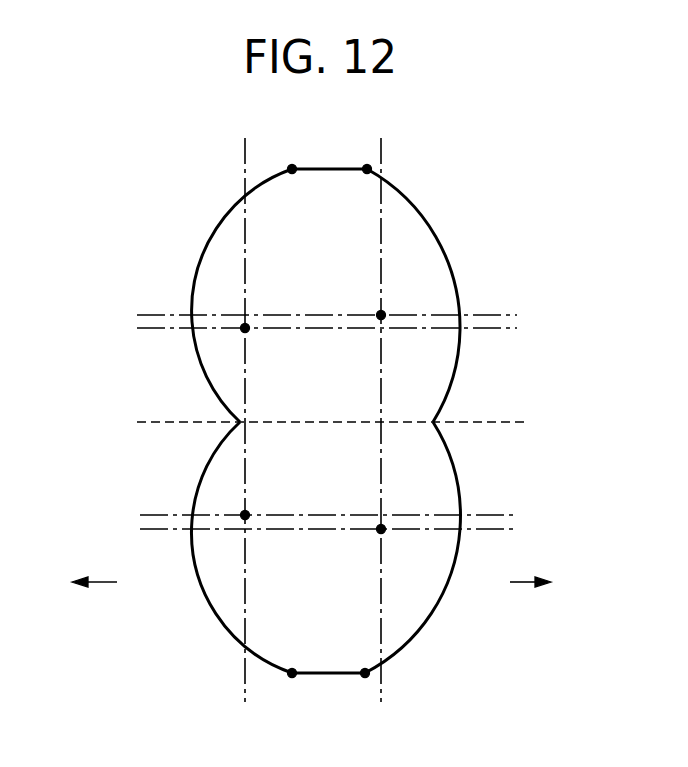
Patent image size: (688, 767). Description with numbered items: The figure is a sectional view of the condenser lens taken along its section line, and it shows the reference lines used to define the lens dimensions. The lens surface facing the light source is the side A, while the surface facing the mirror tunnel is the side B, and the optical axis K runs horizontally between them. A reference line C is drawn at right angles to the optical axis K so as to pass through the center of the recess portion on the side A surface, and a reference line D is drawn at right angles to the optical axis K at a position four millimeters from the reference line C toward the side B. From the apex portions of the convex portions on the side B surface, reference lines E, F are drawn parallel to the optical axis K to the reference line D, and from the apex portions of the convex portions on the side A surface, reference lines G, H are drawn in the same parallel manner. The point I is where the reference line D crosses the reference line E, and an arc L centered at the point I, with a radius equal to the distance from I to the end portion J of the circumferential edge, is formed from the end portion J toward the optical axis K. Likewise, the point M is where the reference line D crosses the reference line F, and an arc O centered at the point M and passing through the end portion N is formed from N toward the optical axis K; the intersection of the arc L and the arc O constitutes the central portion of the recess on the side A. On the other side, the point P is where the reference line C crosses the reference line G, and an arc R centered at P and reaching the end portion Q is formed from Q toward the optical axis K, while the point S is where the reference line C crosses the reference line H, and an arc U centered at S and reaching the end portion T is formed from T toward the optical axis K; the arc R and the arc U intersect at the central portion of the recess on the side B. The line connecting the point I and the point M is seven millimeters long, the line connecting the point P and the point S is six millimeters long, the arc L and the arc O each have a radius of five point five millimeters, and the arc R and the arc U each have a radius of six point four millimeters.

The side A is at (83, 583).
The side B is at (540, 583).
The reference line C is at (245, 155).
The reference line D is at (381, 149).
The reference line E is at (484, 315).
The reference line F is at (171, 529).
The reference line G is at (157, 328).
The reference line H is at (145, 515).
The point I is at (381, 315).
The end portion J is at (292, 169).
The optical axis K is at (485, 422).
The arc L is at (220, 227).
The point M is at (381, 529).
The end portion N is at (292, 673).
The arc O is at (218, 613).
The point P is at (245, 328).
The end portion Q is at (367, 169).
The arc R is at (418, 205).
The point S is at (245, 515).
The end portion T is at (365, 673).
The arc U is at (428, 620).